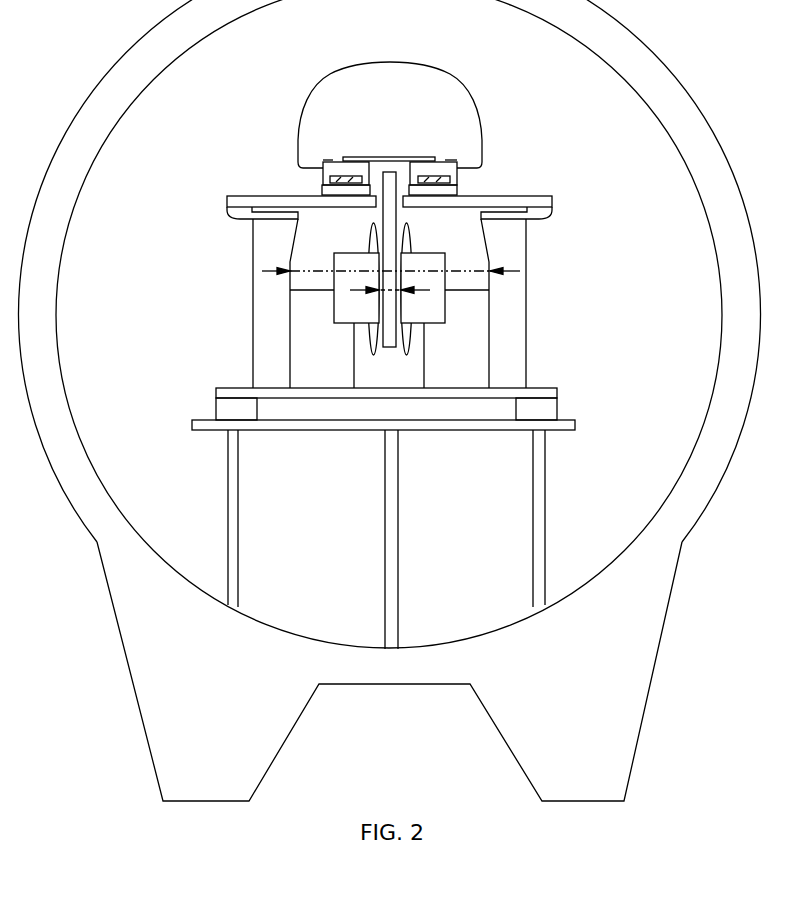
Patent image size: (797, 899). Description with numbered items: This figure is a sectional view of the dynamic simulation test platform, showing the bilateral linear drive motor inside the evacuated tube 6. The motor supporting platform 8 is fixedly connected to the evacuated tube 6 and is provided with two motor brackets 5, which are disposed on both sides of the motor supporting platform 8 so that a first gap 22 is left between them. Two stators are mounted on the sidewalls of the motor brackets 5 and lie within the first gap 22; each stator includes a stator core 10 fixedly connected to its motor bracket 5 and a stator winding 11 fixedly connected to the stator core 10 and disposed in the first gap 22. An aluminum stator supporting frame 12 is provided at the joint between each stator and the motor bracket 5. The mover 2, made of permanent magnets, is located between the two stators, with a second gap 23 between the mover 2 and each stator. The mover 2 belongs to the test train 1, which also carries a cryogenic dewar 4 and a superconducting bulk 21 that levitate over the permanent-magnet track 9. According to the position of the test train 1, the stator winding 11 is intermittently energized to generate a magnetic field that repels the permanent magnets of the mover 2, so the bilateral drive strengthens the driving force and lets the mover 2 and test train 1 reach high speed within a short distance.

The test train 1 is at (465, 93).
The mover 2 is at (388, 348).
The cryogenic dewar 4 is at (468, 172).
The motor bracket 5 is at (275, 357).
The evacuated tube 6 is at (723, 220).
The motor supporting platform 8 is at (227, 490).
The permanent-magnet track 9 is at (458, 187).
The stator core 10 is at (350, 310).
The stator winding 11 is at (412, 224).
The stator supporting frame 12 is at (455, 368).
The superconducting bulk 21 is at (328, 182).
The first gap 22 is at (262, 271).
The second gap 23 is at (352, 292).